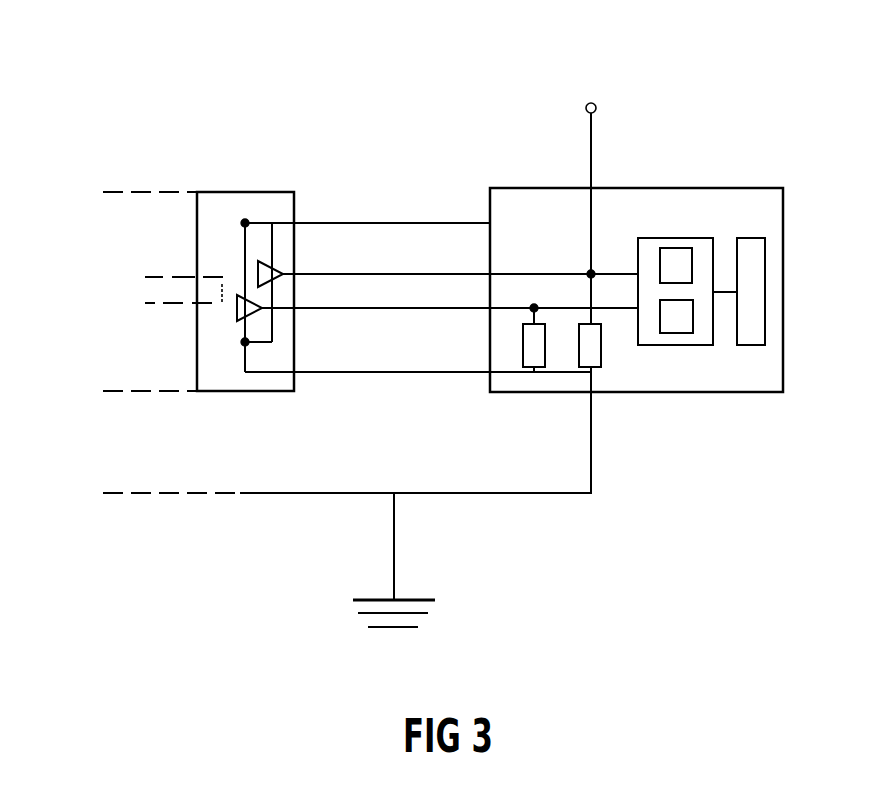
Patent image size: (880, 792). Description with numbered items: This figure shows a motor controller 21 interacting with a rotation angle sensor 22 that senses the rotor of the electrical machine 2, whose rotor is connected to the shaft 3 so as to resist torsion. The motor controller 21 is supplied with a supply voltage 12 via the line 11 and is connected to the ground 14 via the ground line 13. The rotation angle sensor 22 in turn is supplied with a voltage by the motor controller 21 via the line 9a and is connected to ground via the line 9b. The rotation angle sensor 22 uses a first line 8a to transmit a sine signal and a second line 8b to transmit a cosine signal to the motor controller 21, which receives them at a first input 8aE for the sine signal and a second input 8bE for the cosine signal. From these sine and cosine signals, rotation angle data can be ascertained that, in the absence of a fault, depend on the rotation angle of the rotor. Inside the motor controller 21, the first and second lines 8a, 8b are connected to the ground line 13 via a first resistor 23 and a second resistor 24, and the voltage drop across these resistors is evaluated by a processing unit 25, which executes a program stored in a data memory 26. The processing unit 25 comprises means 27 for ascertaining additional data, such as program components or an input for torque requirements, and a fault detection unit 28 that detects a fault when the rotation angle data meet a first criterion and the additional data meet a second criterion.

The electrical machine 2 is at (120, 207).
The shaft 3 is at (160, 290).
The rotation angle sensor 22 is at (297, 197).
The line 9a is at (368, 222).
The first line 8a is at (435, 268).
The second line 8b is at (392, 310).
The line 9b is at (392, 374).
The first input 8aE is at (492, 271).
The second input 8bE is at (492, 305).
The supply voltage 12 is at (597, 105).
The line 11 is at (592, 148).
The motor controller 21 is at (762, 188).
The first resistor 23 is at (523, 345).
The second resistor 24 is at (599, 353).
The processing unit 25 is at (698, 238).
The means for ascertaining additional data 27 is at (667, 264).
The fault detection unit 28 is at (672, 330).
The data memory 26 is at (766, 294).
The ground line 13 is at (592, 470).
The ground 14 is at (423, 597).